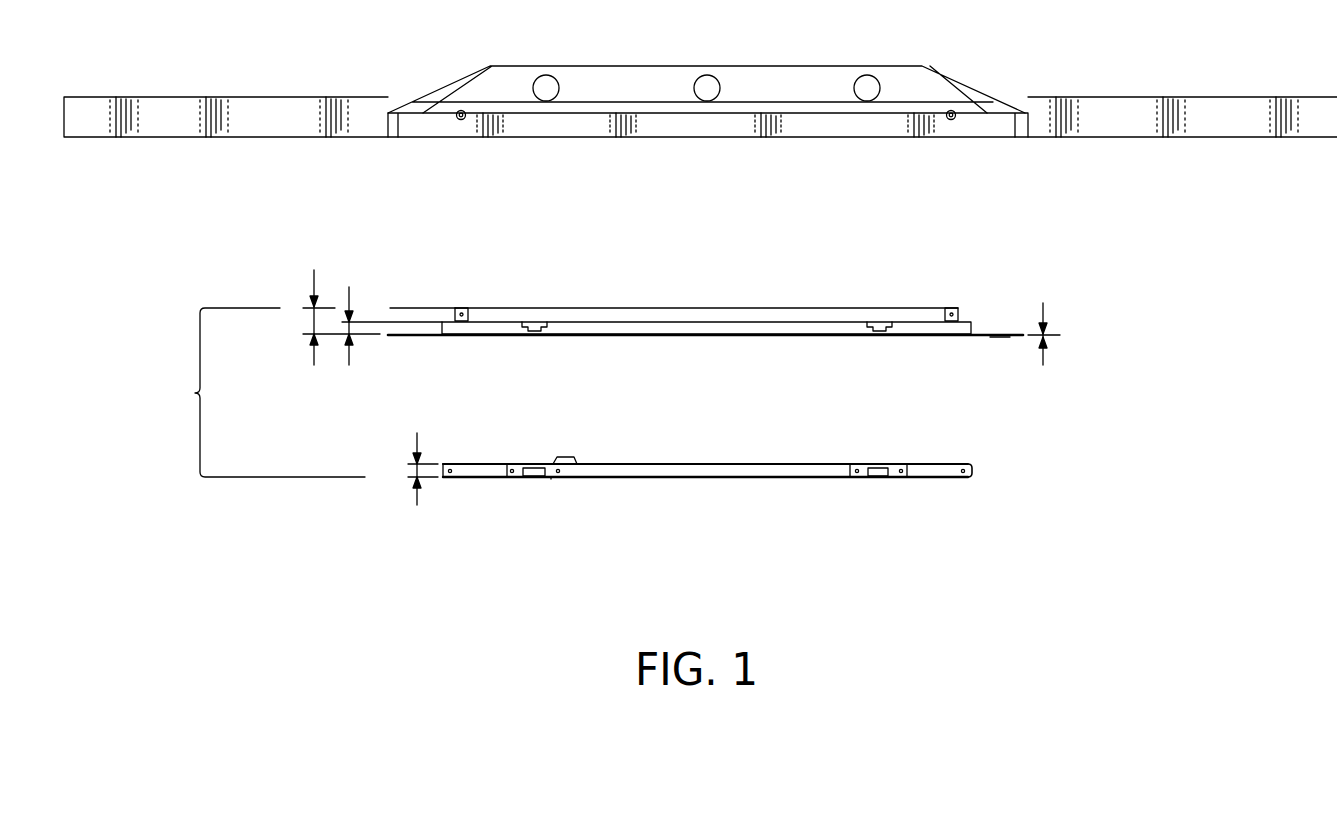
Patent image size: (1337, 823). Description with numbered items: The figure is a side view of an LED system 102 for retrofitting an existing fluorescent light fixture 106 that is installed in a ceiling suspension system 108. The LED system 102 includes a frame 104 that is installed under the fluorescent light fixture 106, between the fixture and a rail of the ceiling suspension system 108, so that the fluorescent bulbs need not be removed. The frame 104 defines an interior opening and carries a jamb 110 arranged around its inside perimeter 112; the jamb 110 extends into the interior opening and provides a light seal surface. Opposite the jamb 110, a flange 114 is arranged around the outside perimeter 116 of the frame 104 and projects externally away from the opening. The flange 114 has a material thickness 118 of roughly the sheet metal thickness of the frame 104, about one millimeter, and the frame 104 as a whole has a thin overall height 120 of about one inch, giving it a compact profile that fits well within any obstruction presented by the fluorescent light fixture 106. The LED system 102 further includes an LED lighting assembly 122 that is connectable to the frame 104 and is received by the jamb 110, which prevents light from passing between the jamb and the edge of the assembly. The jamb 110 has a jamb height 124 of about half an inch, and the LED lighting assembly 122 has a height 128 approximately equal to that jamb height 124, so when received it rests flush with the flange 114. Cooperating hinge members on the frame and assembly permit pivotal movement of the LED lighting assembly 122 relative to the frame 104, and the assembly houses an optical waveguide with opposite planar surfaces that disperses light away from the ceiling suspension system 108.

The light-emitting diode (LED) system 102 is at (255, 392).
The frame 104 is at (676, 300).
The fluorescent light fixture 106 is at (490, 64).
The ceiling suspension system 108 is at (177, 154).
The jamb 110 is at (971, 321).
The inside perimeter 112 is at (952, 307).
The flange 114 is at (998, 337).
The outside perimeter 116 is at (968, 340).
The flange thickness 118 is at (1029, 334).
The overall height 120 is at (313, 322).
The LED lighting assembly 122 is at (654, 522).
The jamb height 124 is at (343, 322).
The height of the LED lighting assembly 128 is at (412, 470).